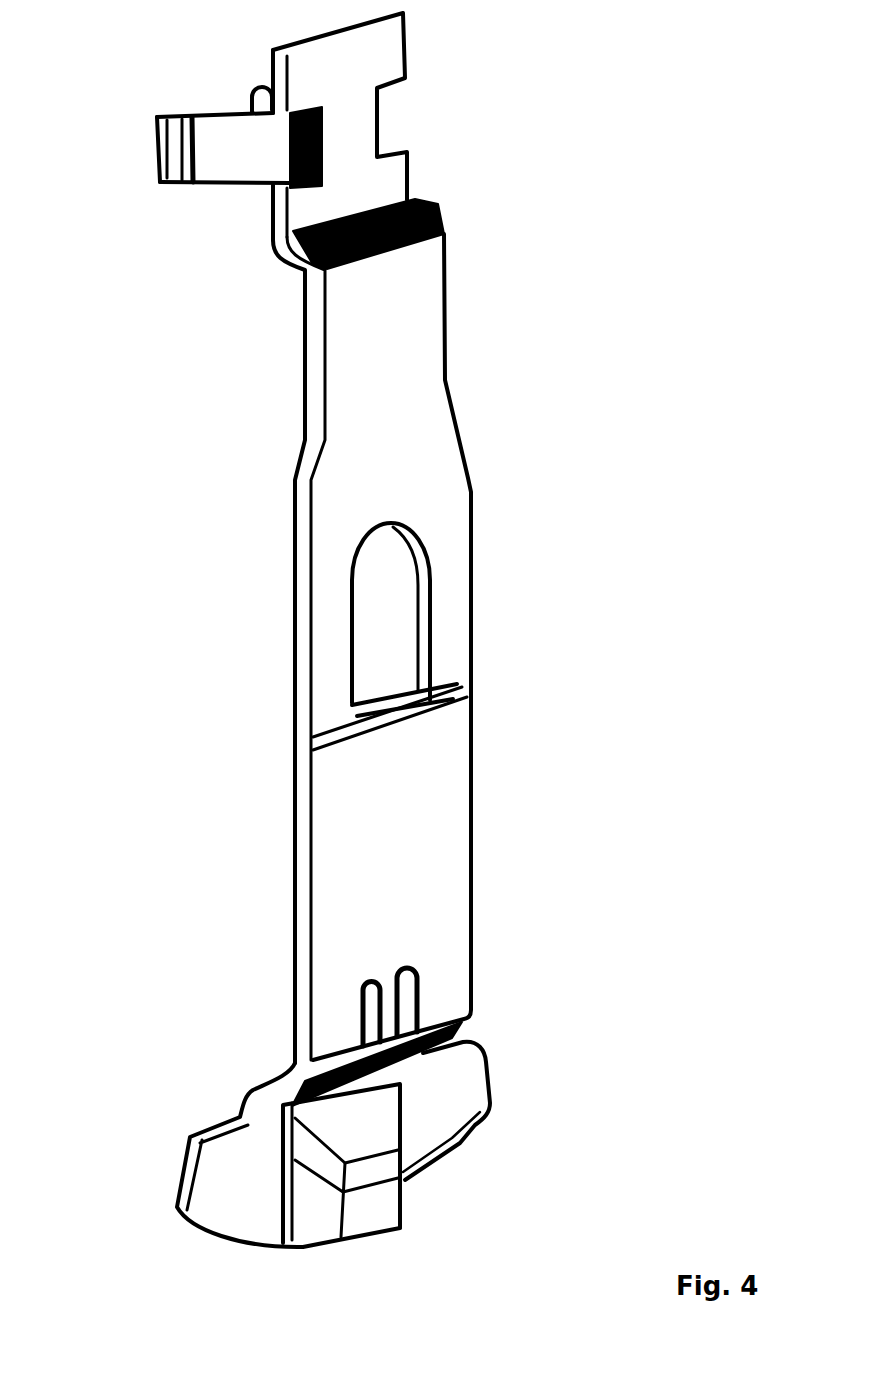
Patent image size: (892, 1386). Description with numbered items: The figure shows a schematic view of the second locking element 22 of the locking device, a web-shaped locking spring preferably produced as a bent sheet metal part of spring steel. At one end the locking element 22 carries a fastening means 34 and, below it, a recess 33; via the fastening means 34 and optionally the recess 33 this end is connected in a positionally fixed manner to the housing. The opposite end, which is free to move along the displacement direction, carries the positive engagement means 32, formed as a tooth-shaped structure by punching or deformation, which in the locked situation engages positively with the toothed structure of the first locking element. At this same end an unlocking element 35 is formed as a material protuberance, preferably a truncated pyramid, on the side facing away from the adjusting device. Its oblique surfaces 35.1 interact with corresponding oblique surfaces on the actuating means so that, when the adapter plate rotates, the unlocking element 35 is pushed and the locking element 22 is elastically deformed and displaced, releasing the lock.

The second locking element 22 is at (371, 655).
The positive engagement means 32 is at (417, 993).
The recess 33 is at (400, 670).
The fastening means 34 is at (220, 128).
The unlocking element 35 is at (380, 1217).
The oblique surfaces 35.1 is at (403, 1177).